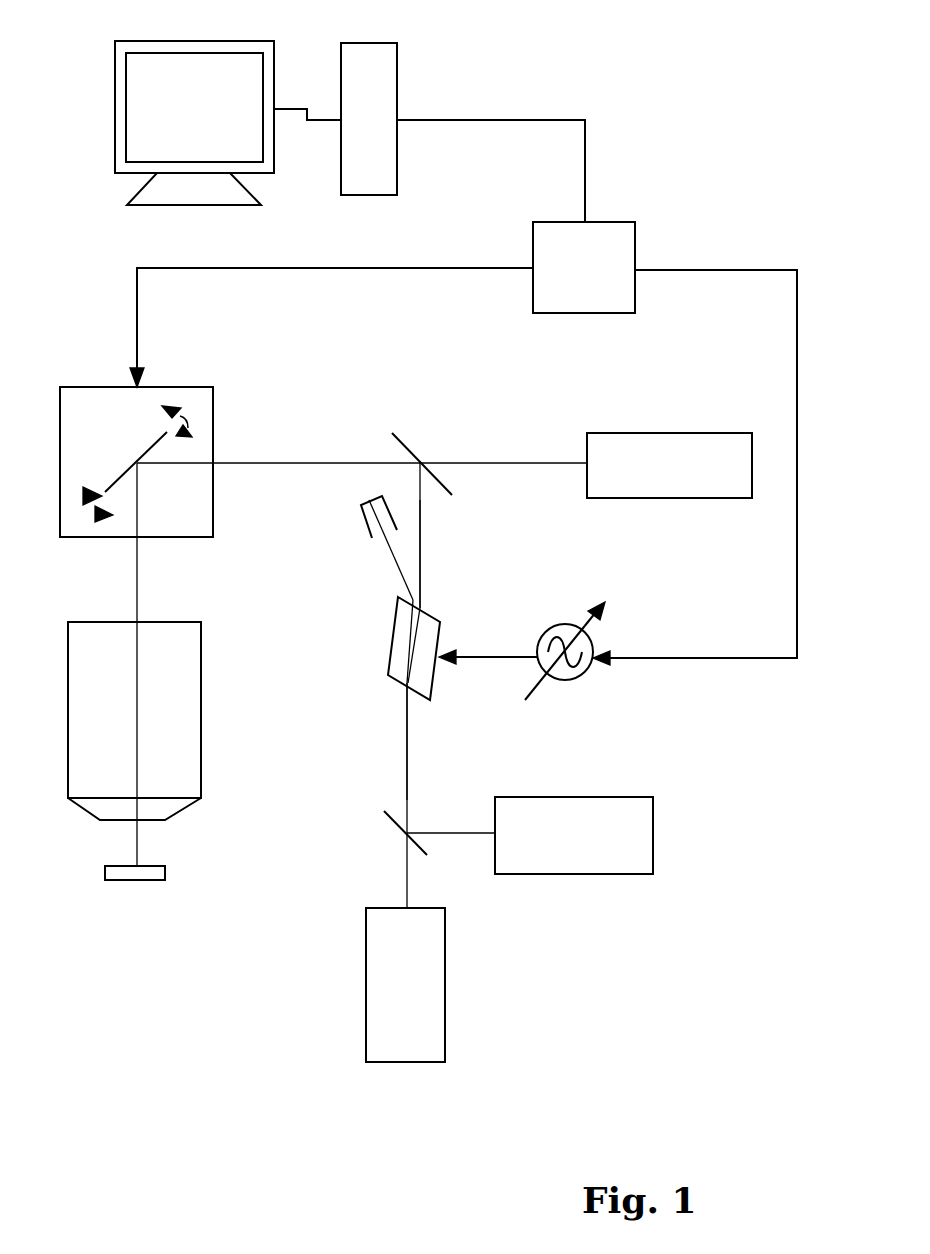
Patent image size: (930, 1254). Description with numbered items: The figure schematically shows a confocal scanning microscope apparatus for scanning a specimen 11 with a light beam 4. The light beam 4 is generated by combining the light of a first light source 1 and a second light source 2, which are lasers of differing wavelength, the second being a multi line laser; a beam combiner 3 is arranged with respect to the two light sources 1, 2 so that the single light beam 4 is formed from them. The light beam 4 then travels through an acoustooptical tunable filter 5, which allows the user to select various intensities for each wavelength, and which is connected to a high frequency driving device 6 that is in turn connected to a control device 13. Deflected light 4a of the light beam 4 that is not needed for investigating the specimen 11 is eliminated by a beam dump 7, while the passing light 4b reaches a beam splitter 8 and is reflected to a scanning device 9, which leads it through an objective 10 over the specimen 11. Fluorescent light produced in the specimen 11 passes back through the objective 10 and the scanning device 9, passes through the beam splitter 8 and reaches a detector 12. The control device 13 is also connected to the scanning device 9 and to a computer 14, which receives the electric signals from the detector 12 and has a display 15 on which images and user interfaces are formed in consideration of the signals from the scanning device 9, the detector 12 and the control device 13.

The first light source 1 is at (427, 973).
The second light source 2 is at (573, 812).
The beam combiner 3 is at (385, 826).
The light beam 4 is at (407, 753).
The deflected light 4a is at (397, 570).
The passing light 4b is at (420, 572).
The acoustooptical tunable filter 5 is at (388, 675).
The high frequency driving device 6 is at (553, 628).
The beam dump 7 is at (372, 538).
The beam splitter 8 is at (410, 448).
The scanning device 9 is at (95, 417).
The objective 10 is at (92, 715).
The specimen 11 is at (143, 870).
The detector 12 is at (607, 440).
The control device 13 is at (607, 240).
The computer 14 is at (383, 93).
The display 15 is at (152, 98).